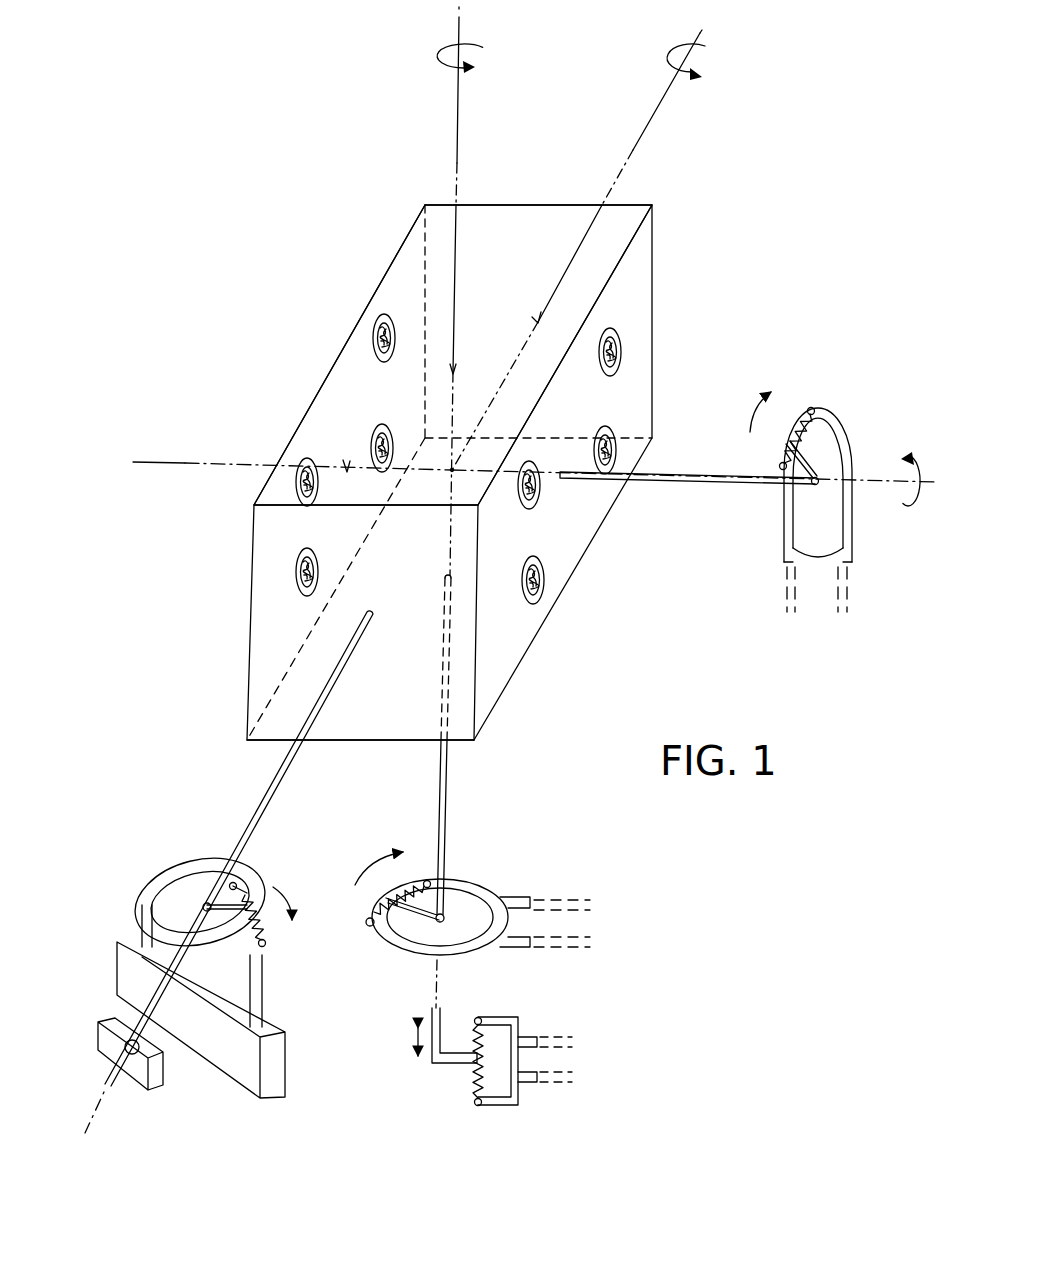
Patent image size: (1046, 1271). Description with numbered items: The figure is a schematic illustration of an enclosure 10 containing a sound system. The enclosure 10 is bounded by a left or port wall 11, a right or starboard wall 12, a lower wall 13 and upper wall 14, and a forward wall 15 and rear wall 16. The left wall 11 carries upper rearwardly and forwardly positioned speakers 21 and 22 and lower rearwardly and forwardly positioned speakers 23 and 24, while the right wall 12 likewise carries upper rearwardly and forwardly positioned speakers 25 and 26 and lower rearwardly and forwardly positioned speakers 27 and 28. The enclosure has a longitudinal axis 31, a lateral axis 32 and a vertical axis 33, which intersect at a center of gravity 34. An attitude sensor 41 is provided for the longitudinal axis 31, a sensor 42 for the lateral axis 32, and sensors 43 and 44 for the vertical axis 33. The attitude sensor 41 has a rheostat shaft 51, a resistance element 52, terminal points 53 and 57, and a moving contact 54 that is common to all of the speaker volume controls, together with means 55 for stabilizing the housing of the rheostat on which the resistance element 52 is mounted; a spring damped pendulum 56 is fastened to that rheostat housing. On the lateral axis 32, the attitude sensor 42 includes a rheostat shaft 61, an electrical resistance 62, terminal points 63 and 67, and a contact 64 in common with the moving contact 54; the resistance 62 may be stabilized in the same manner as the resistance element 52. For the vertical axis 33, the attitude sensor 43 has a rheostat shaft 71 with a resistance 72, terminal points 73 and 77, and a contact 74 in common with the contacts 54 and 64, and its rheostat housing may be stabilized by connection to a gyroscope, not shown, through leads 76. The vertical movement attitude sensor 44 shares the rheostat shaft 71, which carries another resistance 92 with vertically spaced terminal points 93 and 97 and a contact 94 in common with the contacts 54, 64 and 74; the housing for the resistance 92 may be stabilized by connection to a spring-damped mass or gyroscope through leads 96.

The enclosure 10 is at (515, 481).
The left or port wall 11 is at (318, 398).
The right or starboard wall 12 is at (645, 378).
The lower wall 13 is at (566, 571).
The upper wall 14 is at (532, 210).
The forward wall 15 is at (645, 305).
The rear wall 16 is at (395, 735).
The upper rearwardly positioned speaker 21 is at (320, 486).
The upper forwardly positioned speaker 22 is at (384, 362).
The lower rearwardly positioned speaker 23 is at (297, 574).
The lower forwardly positioned speaker 24 is at (371, 442).
The upper rearwardly positioned speaker 25 is at (521, 489).
The upper forwardly positioned speaker 26 is at (600, 354).
The lower rearwardly positioned speaker 27 is at (522, 588).
The lower forwardly positioned speaker 28 is at (595, 452).
The longitudinal axis 31 is at (650, 132).
The lateral axis 32 is at (183, 466).
The vertical axis 33 is at (460, 34).
The center of gravity 34 is at (454, 471).
The attitude sensor 41 is at (220, 916).
The attitude sensor 42 is at (813, 485).
The attitude sensor 43 is at (455, 911).
The vertical movement attitude sensor 44 is at (496, 1051).
The rheostat shaft 51 is at (291, 768).
The resistance element 52 is at (256, 892).
The terminal point 53 is at (238, 883).
The moving contact 54 is at (206, 900).
The means for stabilizing 55 is at (227, 1037).
The spring damped pendulum 56 is at (226, 1061).
The terminal point 57 is at (266, 948).
The rheostat shaft 61 is at (697, 482).
The electrical resistance 62 is at (791, 426).
The terminal point 63 is at (777, 468).
The contact 64 is at (820, 483).
The terminal point 67 is at (811, 407).
The rheostat shaft 71 is at (450, 816).
The resistance 72 is at (376, 905).
The terminal point 73 is at (369, 928).
The contact 74 is at (443, 924).
The leads 76 is at (533, 944).
The terminal point 77 is at (426, 876).
The resistance 92 is at (471, 1075).
The terminal point 93 is at (479, 1018).
The contact 94 is at (458, 1063).
The leads 96 is at (531, 1092).
The terminal point 97 is at (475, 1106).